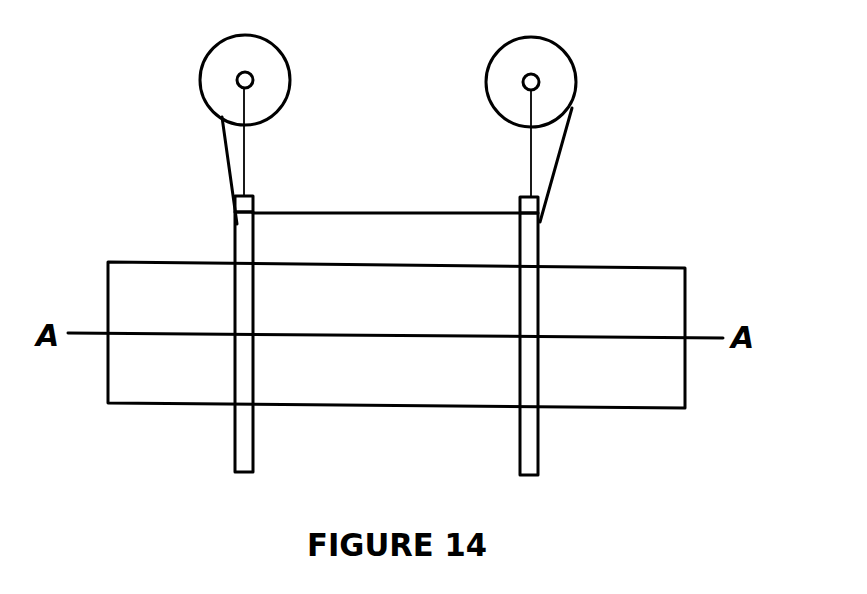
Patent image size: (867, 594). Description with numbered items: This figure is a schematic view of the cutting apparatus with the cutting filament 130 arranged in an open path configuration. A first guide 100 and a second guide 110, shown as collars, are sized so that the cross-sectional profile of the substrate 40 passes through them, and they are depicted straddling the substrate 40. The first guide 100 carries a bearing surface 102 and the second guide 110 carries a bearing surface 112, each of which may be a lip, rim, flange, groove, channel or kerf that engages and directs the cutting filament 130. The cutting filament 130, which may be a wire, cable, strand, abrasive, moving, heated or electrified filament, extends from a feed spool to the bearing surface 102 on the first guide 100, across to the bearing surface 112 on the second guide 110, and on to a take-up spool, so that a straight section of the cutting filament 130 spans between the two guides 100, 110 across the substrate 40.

The substrate 40 is at (120, 280).
The first guide 100 is at (235, 232).
The bearing surface 102 is at (253, 212).
The second guide 110 is at (537, 234).
The bearing surface 112 is at (521, 206).
The cutting filament 130 is at (340, 207).